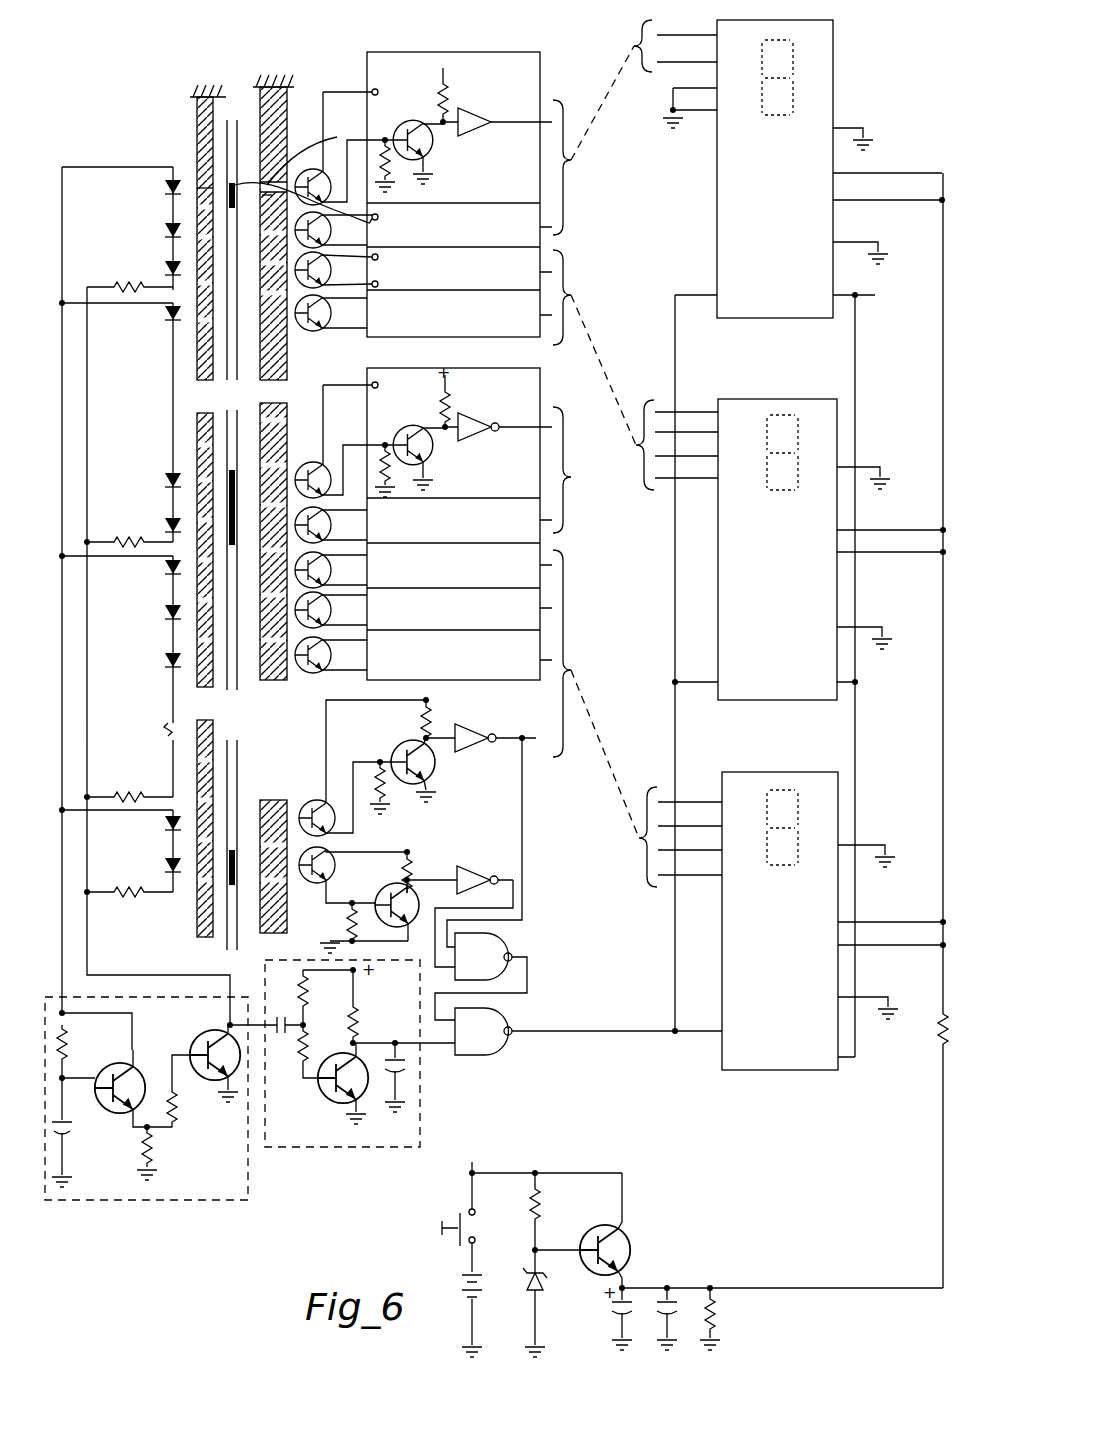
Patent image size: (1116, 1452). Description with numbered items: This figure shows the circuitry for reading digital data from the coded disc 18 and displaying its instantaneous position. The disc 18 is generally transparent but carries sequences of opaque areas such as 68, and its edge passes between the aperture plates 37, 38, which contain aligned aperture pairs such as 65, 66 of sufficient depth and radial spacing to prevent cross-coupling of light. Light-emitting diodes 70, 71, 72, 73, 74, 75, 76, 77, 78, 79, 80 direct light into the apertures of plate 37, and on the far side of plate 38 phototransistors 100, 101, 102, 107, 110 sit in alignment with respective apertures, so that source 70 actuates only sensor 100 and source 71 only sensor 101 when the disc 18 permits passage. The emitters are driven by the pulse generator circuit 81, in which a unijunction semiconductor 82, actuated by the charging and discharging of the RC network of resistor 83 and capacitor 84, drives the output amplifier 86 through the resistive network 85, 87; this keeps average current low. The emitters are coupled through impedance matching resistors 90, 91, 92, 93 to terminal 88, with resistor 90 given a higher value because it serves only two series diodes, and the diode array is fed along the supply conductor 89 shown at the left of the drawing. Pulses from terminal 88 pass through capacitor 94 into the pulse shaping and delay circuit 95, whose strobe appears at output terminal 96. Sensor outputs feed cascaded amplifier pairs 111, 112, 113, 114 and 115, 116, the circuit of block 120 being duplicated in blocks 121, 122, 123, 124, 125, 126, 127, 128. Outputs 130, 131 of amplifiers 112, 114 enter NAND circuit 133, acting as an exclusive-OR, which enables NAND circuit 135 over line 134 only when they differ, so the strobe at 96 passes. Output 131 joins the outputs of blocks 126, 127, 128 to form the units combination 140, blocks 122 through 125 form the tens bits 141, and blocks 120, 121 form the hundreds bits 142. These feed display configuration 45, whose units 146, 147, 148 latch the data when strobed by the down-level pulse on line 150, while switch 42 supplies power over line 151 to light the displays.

The coded disc 18 is at (234, 118).
The aperture plate 37 is at (197, 116).
The aperture plate 38 is at (280, 104).
The switch 42 is at (458, 1210).
The display configuration 45 is at (804, 1098).
The aperture 65 is at (196, 192).
The aperture 66 is at (303, 134).
The opaque area 68 is at (324, 209).
The light-emitting diode 70 is at (165, 866).
The light-emitting diode 71 is at (165, 823).
The light-emitting diode 72 is at (165, 661).
The light-emitting diode 73 is at (165, 613).
The light-emitting diode 74 is at (165, 567).
The light-emitting diode 75 is at (168, 526).
The light-emitting diode 76 is at (166, 481).
The light-emitting diode 77 is at (160, 314).
The light-emitting diode 78 is at (164, 268).
The light-emitting diode 79 is at (164, 233).
The light-emitting diode 80 is at (165, 191).
The pulse generator circuit 81 is at (182, 1208).
The unijunction semiconductor 82 is at (118, 1068).
The resistor 83 is at (71, 1041).
The capacitor 84 is at (68, 1128).
The resistor 85 is at (172, 1094).
The output amplifier 86 is at (200, 1038).
The resistor 87 is at (150, 1145).
The terminal 88 is at (231, 1024).
The diode supply line 89 is at (96, 142).
The impedance matching resistor 90 is at (140, 896).
The impedance matching resistor 91 is at (128, 794).
The impedance matching resistor 92 is at (128, 540).
The impedance matching resistor 93 is at (130, 284).
The capacitor 94 is at (324, 1088).
The pulse shaping and delay circuit 95 is at (305, 1152).
The output terminal 96 is at (438, 1056).
The phototransistor 100 is at (311, 887).
The phototransistor 101 is at (307, 800).
The phototransistor 102 is at (318, 673).
The phototransistor 107 is at (318, 332).
The phototransistor 110 is at (274, 190).
The amplifier 111 is at (380, 890).
The inverting amplifier 112 is at (469, 868).
The amplifier 113 is at (393, 738).
The inverting amplifier 114 is at (466, 723).
The amplifier 115 is at (432, 152).
The inverting amplifier 116 is at (498, 110).
The amplifier block 120 is at (495, 52).
The amplifier block 121 is at (459, 224).
The amplifier block 122 is at (459, 267).
The amplifier block 123 is at (459, 311).
The amplifier block 124 is at (535, 370).
The amplifier block 125 is at (459, 519).
The amplifier block 126 is at (459, 563).
The amplifier block 127 is at (459, 607).
The amplifier block 128 is at (459, 650).
The output 130 is at (523, 897).
The output 131 is at (516, 779).
The NAND circuit 133 is at (514, 940).
The line 134 is at (527, 975).
The NAND circuit 135 is at (512, 1015).
The four-bit combination 140 is at (650, 718).
The four input bits 141 is at (636, 446).
The two input bits 142 is at (612, 102).
The display element 146 is at (717, 192).
The display element 147 is at (789, 689).
The display element 148 is at (768, 1070).
The strobe output line 150 is at (632, 1032).
The line 151 is at (800, 1287).